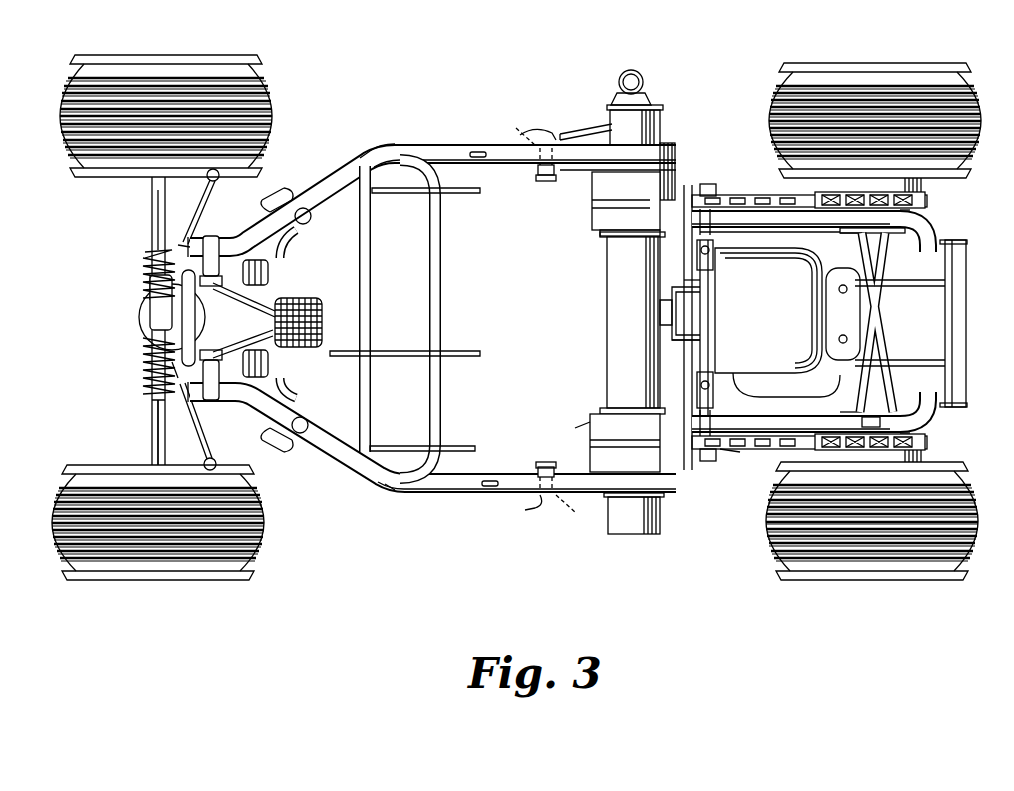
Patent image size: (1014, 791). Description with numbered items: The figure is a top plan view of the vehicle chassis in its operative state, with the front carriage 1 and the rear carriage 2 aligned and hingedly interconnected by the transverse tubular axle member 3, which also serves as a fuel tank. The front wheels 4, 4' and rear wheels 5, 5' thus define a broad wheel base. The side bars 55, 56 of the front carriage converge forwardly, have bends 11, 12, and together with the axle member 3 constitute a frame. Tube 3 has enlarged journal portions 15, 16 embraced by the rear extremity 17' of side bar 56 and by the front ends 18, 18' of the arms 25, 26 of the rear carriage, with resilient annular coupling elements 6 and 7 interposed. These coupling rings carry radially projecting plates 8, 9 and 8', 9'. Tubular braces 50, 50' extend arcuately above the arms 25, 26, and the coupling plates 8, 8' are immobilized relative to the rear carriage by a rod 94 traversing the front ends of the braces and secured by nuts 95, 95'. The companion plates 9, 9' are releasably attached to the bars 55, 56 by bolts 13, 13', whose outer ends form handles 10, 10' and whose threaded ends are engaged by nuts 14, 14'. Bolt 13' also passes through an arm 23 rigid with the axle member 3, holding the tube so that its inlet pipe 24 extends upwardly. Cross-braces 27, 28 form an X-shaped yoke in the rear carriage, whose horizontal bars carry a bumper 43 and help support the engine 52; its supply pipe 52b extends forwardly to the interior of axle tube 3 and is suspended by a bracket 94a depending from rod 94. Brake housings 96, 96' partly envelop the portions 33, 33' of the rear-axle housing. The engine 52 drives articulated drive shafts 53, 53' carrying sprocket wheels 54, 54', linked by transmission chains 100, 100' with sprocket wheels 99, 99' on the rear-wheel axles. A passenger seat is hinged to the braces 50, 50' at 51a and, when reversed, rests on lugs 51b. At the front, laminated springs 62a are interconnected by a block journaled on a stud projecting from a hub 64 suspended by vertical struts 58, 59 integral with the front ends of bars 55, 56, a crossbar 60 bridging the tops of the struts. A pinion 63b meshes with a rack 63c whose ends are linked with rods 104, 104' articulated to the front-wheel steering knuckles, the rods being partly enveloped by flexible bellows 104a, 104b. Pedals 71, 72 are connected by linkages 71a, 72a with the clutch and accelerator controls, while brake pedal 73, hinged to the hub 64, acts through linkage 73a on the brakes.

The front carriage 1 is at (380, 150).
The rear carriage 2 is at (790, 210).
The transverse tubular axle member 3 is at (607, 303).
The front wheel 4 is at (162, 523).
The front wheel 4' is at (176, 112).
The rear wheel 5 is at (861, 533).
The rear wheel 5' is at (875, 110).
The resilient annular coupling element 6 is at (590, 456).
The resilient annular coupling element 7 is at (592, 200).
The coupling plate 8 is at (647, 487).
The coupling plate 8' is at (618, 160).
The coupling plate 9 is at (532, 450).
The coupling plate 9' is at (530, 190).
The handle 10 is at (517, 522).
The handle 10' is at (539, 117).
The bend 11 is at (400, 485).
The bend 12 is at (400, 145).
The bolt 13 is at (575, 512).
The bolt 13' is at (518, 126).
The nut 14 is at (572, 480).
The nut 14' is at (531, 188).
The journal portion 15 is at (604, 238).
The journal portion 16 is at (602, 410).
The rear extremity of side bar 17' is at (687, 160).
The front end of arm 18 is at (567, 424).
The front end of arm 18' is at (608, 227).
The arm 23 is at (578, 135).
The inlet pipe 24 is at (643, 82).
The arm 25 is at (760, 450).
The arm 26 is at (720, 207).
The cross-brace 27 is at (890, 262).
The cross-brace 28 is at (826, 300).
The rear-axle housing portion 33 is at (837, 391).
The rear-axle housing portion 33' is at (840, 253).
The bumper 43 is at (945, 338).
The tubular brace 50 is at (810, 402).
The tubular brace 50' is at (802, 240).
The seat hinge 51a is at (880, 419).
The lug 51b is at (937, 422).
The engine 52 is at (752, 318).
The supply pipe 52b is at (672, 312).
The articulated drive shaft 53 is at (722, 394).
The articulated drive shaft 53' is at (729, 258).
The sprocket wheel 54 is at (719, 467).
The sprocket wheel 54' is at (703, 175).
The side bar 55 is at (445, 494).
The side bar 56 is at (468, 130).
The vertical strut 58 is at (205, 200).
The vertical strut 59 is at (165, 405).
The crossbar 60 is at (200, 300).
The laminated springs 62a is at (160, 395).
The pinion 63b is at (150, 322).
The rack 63c is at (143, 292).
The hub 64 is at (145, 350).
The pedal 71 is at (268, 372).
The linkage 71a is at (405, 446).
The pedal 72 is at (268, 270).
The linkage 72a is at (403, 193).
The brake pedal 73 is at (322, 323).
The linkage 73a is at (408, 355).
The rod 94 is at (684, 280).
The bracket 94a is at (672, 340).
The nut 95 is at (702, 400).
The nut 95' is at (676, 242).
The brake housing 96 is at (901, 453).
The brake housing 96' is at (895, 197).
The sprocket wheel 99 is at (832, 444).
The sprocket wheel 99' is at (940, 222).
The transmission chain 100 is at (741, 484).
The transmission chain 100' is at (809, 184).
The steering rod 104 is at (216, 426).
The steering rod 104' is at (238, 201).
The flexible bellows 104a is at (172, 372).
The flexible bellows 104b is at (145, 258).